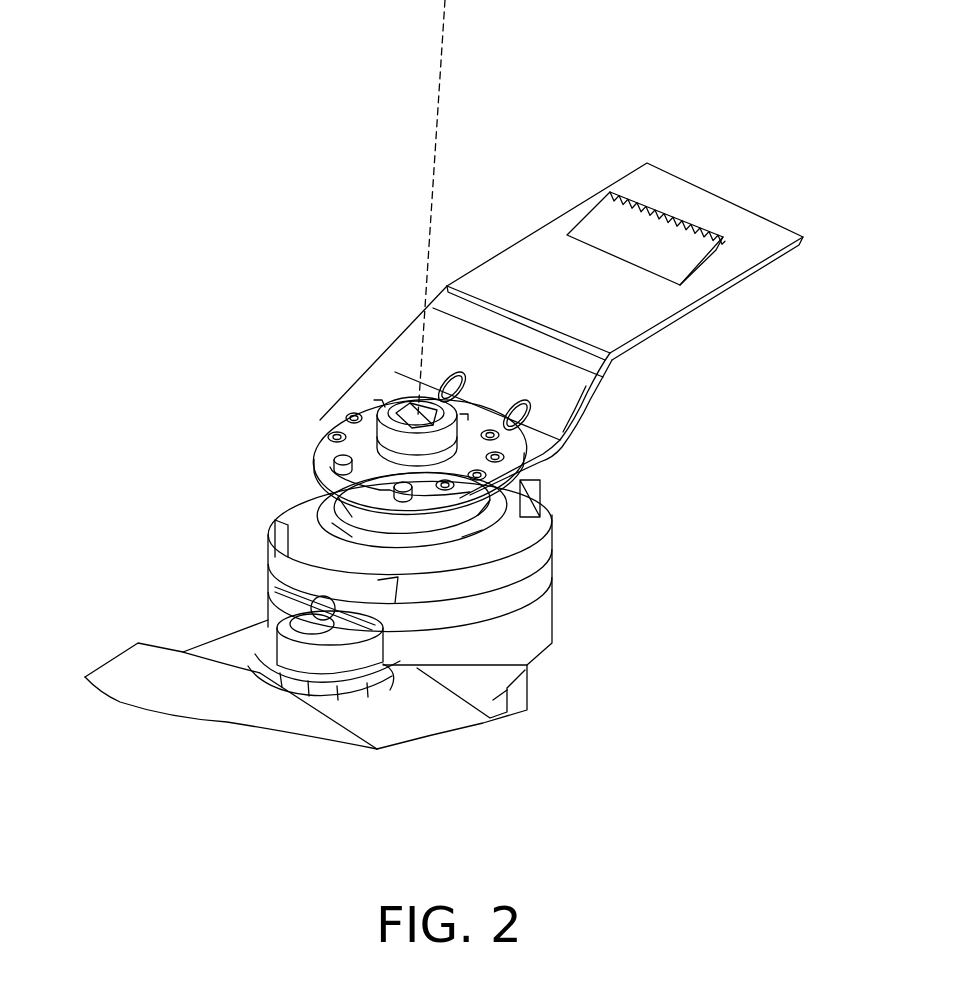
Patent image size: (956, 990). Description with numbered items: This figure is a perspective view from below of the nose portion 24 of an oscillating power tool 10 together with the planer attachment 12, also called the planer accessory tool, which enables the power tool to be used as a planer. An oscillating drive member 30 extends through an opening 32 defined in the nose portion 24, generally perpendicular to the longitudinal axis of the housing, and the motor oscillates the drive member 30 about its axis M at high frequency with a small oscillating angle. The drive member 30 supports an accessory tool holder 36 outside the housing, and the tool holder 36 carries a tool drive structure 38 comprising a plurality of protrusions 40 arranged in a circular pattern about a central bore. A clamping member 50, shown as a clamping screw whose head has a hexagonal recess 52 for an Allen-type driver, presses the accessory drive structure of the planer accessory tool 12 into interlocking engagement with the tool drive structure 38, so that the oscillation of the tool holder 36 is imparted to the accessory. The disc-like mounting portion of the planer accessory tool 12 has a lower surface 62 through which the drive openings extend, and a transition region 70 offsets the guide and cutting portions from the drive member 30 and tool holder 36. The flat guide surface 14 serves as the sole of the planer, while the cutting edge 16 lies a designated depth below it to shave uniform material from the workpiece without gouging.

The axis M is at (443, 50).
The oscillating power tool 10 is at (146, 568).
The planer attachment 12 is at (535, 185).
The flat guide surface 14 is at (757, 235).
The cutting edge 16 is at (673, 210).
The nose portion 24 is at (527, 650).
The oscillating drive member 30 is at (402, 578).
The opening 32 is at (333, 507).
The accessory tool holder 36 is at (370, 483).
The tool drive structure 38 is at (381, 558).
The protrusions 40 is at (337, 432).
The clamping member 50 is at (460, 448).
The hexagonal recess 52 is at (403, 408).
The lower surface 62 is at (375, 405).
The transition region 70 is at (580, 390).